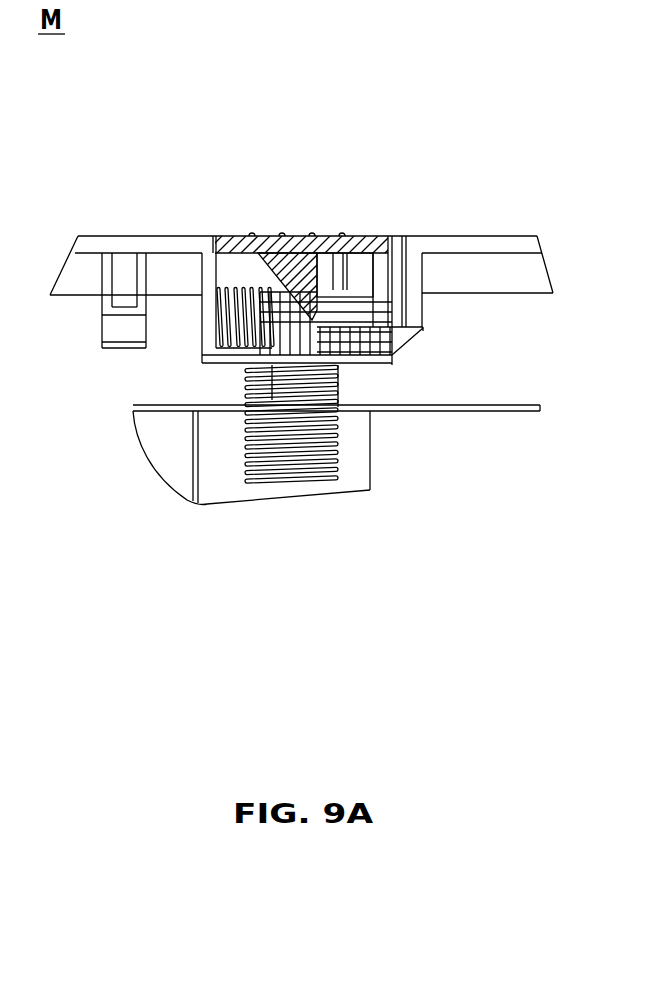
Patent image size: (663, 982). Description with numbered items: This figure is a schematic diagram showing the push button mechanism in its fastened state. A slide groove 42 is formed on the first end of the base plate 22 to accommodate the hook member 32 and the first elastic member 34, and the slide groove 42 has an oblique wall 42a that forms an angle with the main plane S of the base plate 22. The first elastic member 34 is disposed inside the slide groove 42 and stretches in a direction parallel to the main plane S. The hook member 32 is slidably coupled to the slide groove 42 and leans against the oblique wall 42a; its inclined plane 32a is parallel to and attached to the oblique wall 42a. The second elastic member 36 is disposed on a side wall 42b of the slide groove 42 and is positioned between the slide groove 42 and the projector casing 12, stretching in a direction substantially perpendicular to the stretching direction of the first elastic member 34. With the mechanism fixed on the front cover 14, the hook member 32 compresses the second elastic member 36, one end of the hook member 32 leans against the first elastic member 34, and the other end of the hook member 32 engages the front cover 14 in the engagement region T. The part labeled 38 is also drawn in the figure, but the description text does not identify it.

The main plane S is at (135, 237).
The base plate 22 is at (177, 248).
The slide groove 42 is at (233, 272).
The oblique wall 42a is at (253, 238).
The front cover 14 is at (455, 244).
The inclined plane 32a is at (312, 318).
The engagement region T is at (423, 330).
The first elastic member 34 is at (226, 336).
The side wall 42b is at (237, 357).
The hook member 32 is at (343, 328).
The projector casing 12 is at (442, 407).
The bracket 38 is at (248, 398).
The second elastic member 36 is at (312, 482).